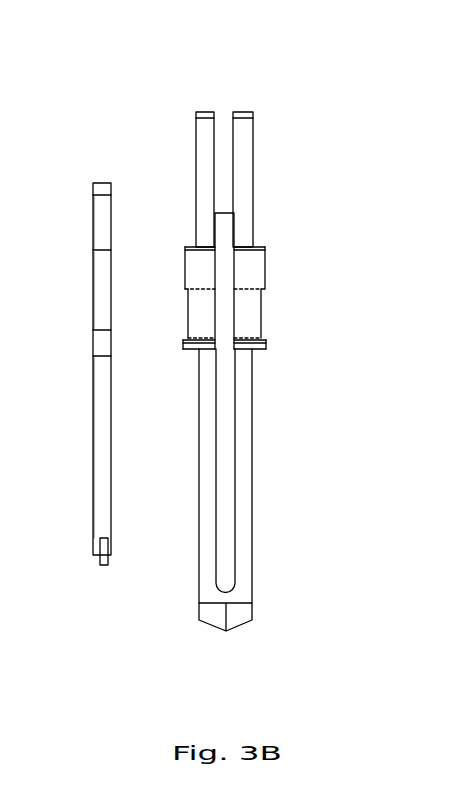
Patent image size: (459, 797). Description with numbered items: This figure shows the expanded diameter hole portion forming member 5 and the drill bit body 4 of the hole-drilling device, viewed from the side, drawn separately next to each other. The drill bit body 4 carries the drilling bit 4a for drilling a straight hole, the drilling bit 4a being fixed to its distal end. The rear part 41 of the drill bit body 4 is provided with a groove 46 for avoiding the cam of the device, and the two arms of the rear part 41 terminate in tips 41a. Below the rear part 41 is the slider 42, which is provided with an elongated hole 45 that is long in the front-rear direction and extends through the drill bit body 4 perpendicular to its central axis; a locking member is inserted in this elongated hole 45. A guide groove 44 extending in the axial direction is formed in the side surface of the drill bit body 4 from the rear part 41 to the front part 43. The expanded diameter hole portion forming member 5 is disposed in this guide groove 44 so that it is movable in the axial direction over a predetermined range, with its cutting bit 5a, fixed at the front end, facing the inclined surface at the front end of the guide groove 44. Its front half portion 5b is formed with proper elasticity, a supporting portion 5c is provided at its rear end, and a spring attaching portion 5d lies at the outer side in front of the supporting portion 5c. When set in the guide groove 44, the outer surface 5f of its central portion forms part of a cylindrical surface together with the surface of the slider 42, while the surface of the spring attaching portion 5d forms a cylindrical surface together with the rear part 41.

The drill bit body 4 is at (259, 105).
The drilling bit 4a is at (240, 627).
The rear part 41 is at (254, 135).
The contact arm tip 41a is at (242, 110).
The slider 42 is at (264, 268).
The front part 43 is at (253, 494).
The guide groove 44 is at (225, 526).
The elongated hole 45 is at (248, 289).
The groove 46 is at (222, 166).
The expanded diameter hole portion forming member 5 is at (107, 170).
The cutting bit 5a is at (104, 568).
The front half portion 5b is at (100, 405).
The supporting portion 5c is at (93, 184).
The spring attaching portion 5d is at (100, 220).
The outer surface 5f is at (100, 294).